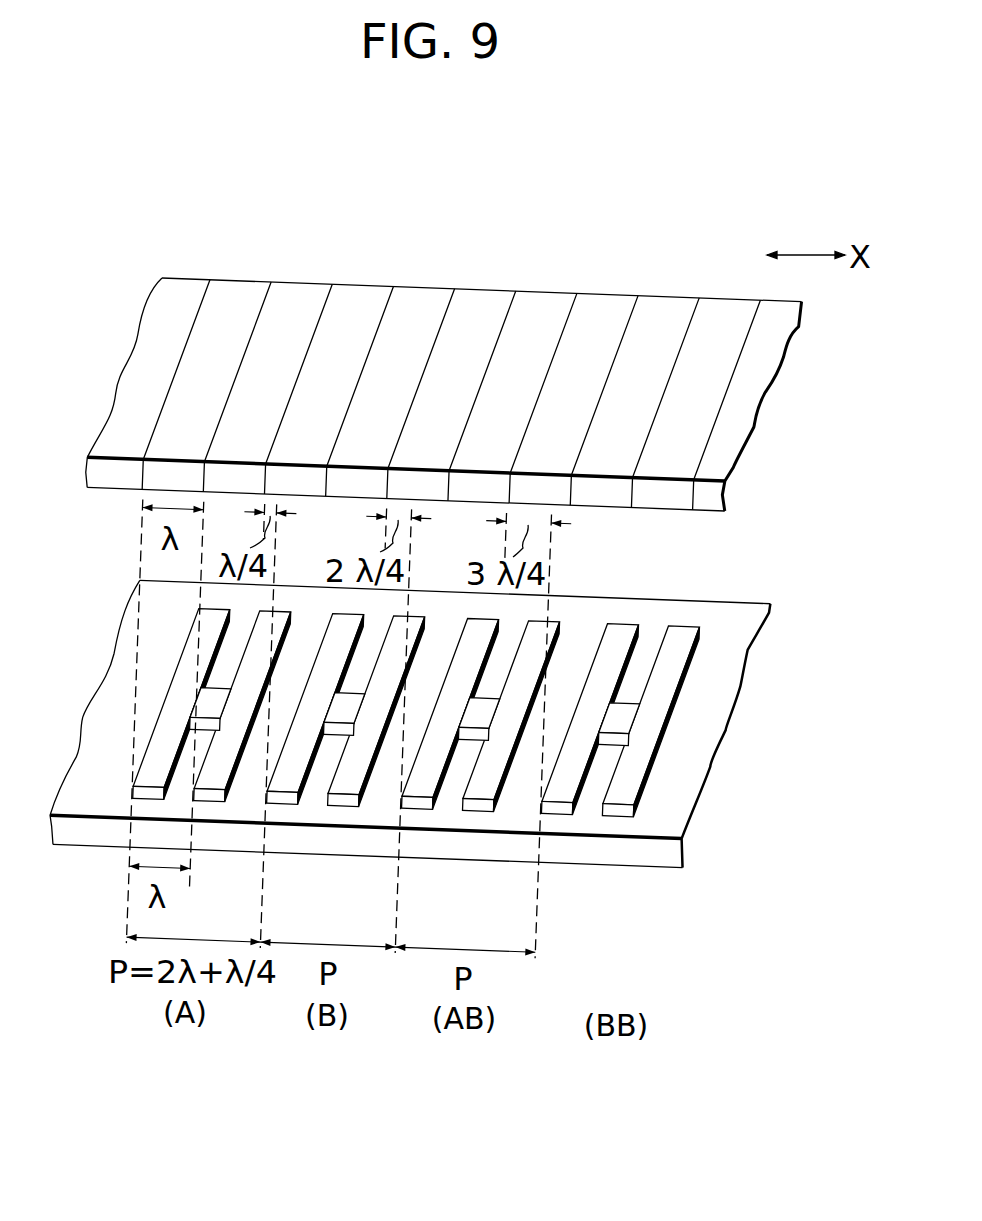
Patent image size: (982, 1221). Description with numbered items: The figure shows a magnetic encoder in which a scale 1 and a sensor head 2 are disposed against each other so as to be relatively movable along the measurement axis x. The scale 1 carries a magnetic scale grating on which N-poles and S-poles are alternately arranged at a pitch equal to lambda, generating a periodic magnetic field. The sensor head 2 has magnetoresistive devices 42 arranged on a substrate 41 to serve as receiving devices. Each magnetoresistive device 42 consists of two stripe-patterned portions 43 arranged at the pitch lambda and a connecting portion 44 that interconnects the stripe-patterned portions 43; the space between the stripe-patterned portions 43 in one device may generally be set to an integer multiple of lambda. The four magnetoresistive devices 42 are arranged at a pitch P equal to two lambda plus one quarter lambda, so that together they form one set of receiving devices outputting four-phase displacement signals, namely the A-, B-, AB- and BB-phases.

The scale 1 is at (667, 265).
The sensor head 2 is at (432, 715).
The substrate 41 is at (623, 853).
The magnetoresistive device 42 is at (474, 672).
The stripe-patterned portion 43 is at (682, 633).
The connecting portion 44 is at (618, 713).